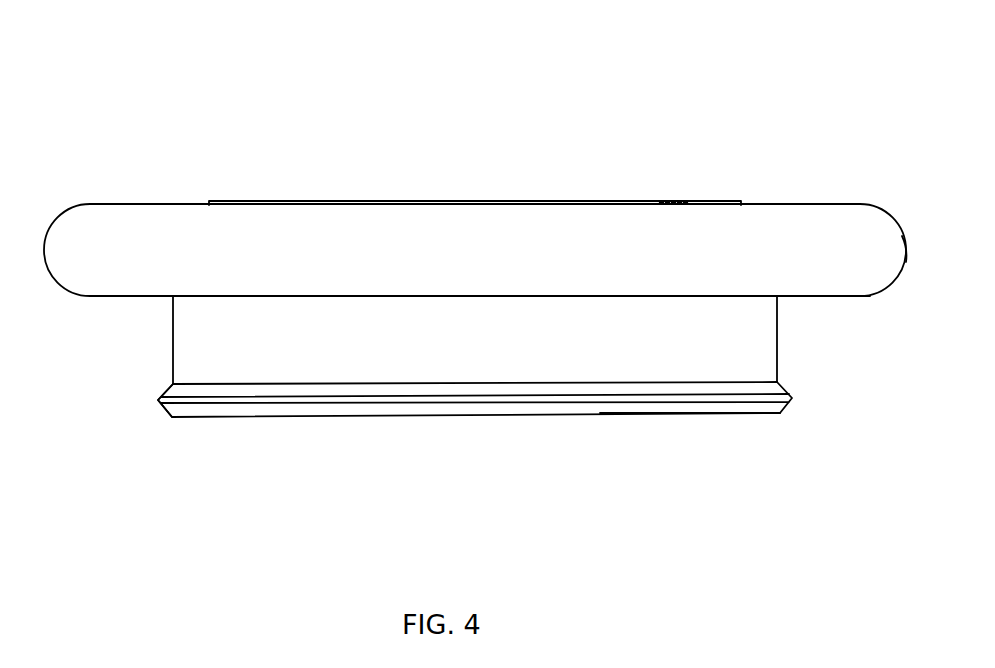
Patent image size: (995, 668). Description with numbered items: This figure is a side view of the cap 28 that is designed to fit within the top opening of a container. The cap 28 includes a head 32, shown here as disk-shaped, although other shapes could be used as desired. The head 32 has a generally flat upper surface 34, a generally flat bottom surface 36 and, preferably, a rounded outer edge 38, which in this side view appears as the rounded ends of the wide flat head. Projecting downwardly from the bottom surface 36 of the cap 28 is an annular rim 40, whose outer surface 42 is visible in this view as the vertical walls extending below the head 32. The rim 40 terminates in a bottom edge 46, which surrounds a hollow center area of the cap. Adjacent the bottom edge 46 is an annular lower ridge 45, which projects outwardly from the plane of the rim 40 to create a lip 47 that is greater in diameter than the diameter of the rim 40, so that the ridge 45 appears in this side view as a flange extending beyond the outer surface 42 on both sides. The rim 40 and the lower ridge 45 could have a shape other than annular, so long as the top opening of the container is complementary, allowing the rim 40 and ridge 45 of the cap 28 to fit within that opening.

The cap 28 is at (815, 103).
The head 32 is at (905, 212).
The upper surface 34 is at (197, 206).
The bottom surface 36 is at (820, 296).
The rounded outer edge 38 is at (905, 258).
The annular rim 40 is at (140, 360).
The outer surface 42 is at (716, 344).
The annular lower ridge 45 is at (816, 400).
The bottom edge 46 is at (720, 414).
The lip 47 is at (162, 400).